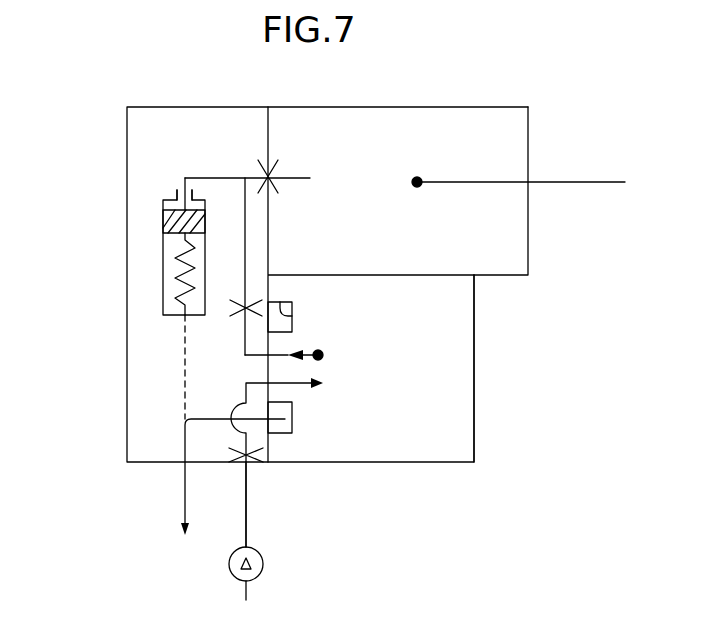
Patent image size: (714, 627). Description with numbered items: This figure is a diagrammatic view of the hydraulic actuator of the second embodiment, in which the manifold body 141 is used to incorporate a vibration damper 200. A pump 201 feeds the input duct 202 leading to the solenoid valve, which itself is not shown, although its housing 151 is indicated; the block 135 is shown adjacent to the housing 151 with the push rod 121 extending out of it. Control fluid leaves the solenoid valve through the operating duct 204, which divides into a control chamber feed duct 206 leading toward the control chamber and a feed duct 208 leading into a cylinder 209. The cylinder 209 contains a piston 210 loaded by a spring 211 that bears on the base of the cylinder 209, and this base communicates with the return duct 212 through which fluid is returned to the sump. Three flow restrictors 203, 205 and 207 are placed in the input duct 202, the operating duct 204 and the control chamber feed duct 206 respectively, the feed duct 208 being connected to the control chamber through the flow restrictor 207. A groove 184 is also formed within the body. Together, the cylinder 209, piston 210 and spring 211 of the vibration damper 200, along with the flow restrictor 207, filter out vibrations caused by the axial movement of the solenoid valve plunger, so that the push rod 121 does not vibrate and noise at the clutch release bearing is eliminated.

The manifold body 141 is at (114, 142).
The steering valve block 135 is at (497, 107).
The push rod 121 is at (570, 182).
The housing 151 is at (487, 384).
The groove 184 is at (292, 317).
The vibration damper 200 is at (125, 248).
The pump 201 is at (263, 562).
The input duct 202 is at (248, 508).
The flow restrictor 203 is at (253, 460).
The operating duct 204 is at (245, 355).
The flow restrictor 205 is at (228, 312).
The control chamber feed duct 206 is at (300, 178).
The flow restrictor 207 is at (263, 173).
The feed duct 208 is at (212, 177).
The cylinder 209 is at (163, 203).
The piston 210 is at (163, 222).
The spring 211 is at (178, 288).
The return duct 212 is at (182, 488).